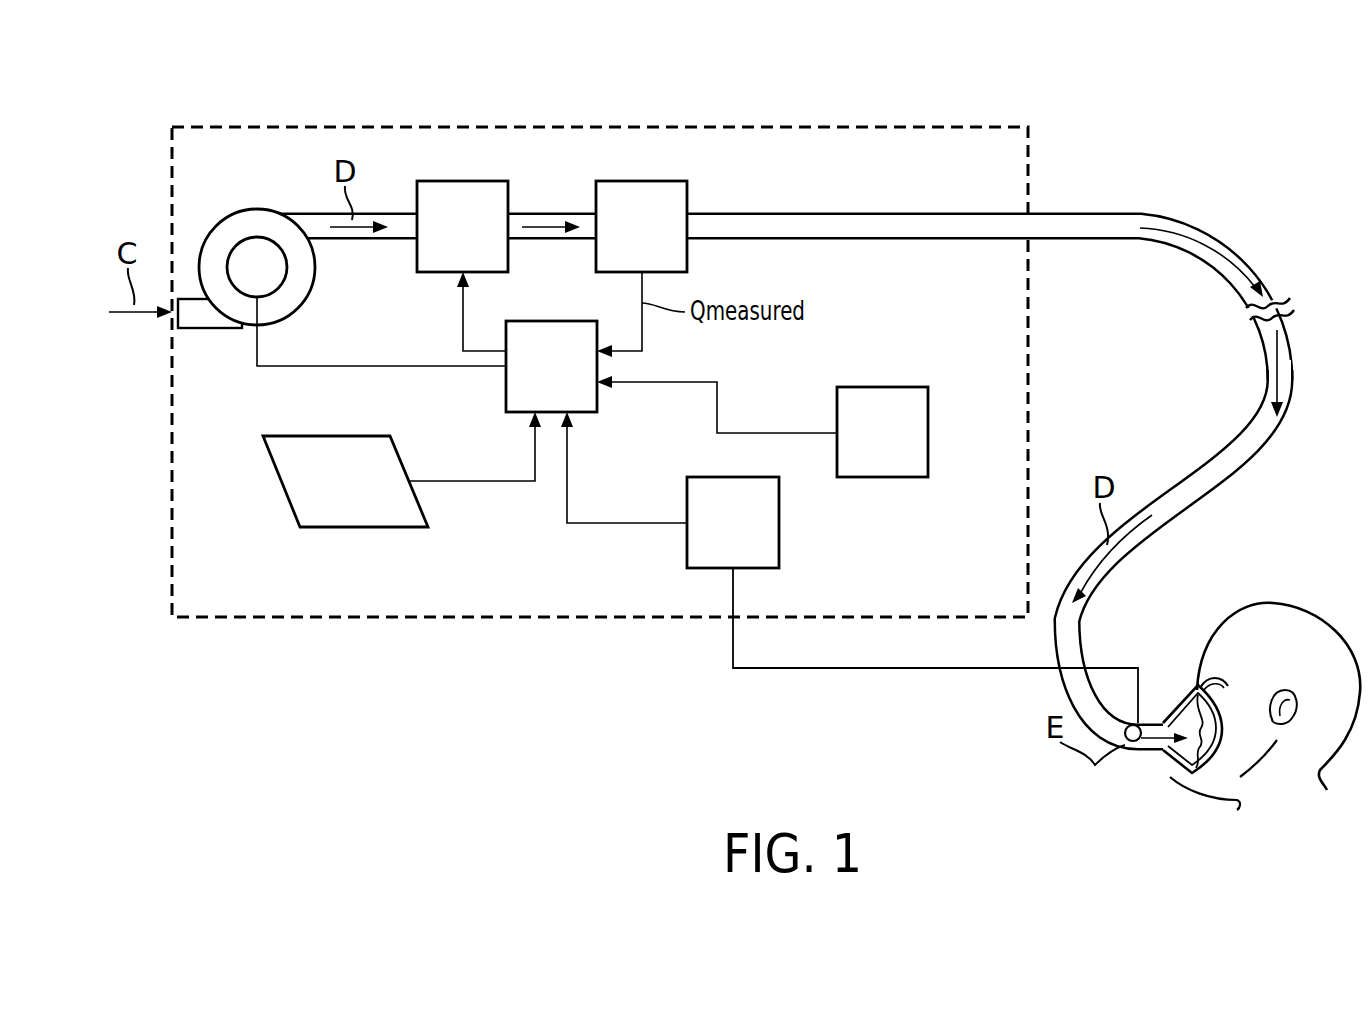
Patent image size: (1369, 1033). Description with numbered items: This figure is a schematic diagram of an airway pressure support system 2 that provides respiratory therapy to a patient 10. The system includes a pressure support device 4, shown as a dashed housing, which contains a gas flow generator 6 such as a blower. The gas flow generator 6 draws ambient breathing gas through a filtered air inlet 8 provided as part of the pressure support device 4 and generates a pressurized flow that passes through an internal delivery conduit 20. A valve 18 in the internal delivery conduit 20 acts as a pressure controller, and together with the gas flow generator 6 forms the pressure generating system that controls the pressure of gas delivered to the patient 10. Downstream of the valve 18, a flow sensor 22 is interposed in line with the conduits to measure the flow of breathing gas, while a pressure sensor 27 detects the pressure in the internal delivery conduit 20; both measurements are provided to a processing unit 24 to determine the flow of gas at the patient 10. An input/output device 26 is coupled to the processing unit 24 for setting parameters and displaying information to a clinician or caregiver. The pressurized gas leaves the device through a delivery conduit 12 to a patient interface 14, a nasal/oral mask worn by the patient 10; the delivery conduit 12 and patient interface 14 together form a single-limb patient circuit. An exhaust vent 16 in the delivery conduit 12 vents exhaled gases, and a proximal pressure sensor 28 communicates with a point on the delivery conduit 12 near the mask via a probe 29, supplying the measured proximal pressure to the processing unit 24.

The airway pressure support system 2 is at (203, 100).
The pressure support device 4 is at (891, 127).
The gas flow generator 6 is at (219, 222).
The filtered air inlet 8 is at (174, 320).
The patient 10 is at (1307, 615).
The delivery conduit 12 is at (1295, 382).
The patient interface 14 is at (1180, 770).
The exhaust vent 16 is at (1131, 742).
The valve 18 is at (477, 243).
The internal delivery conduit 20 is at (748, 213).
The flow sensor 22 is at (656, 243).
The processing unit 24 is at (566, 384).
The input/output device 26 is at (360, 499).
The pressure sensor 27 is at (897, 449).
The proximal pressure sensor 28 is at (748, 540).
The probe 29 is at (1125, 668).